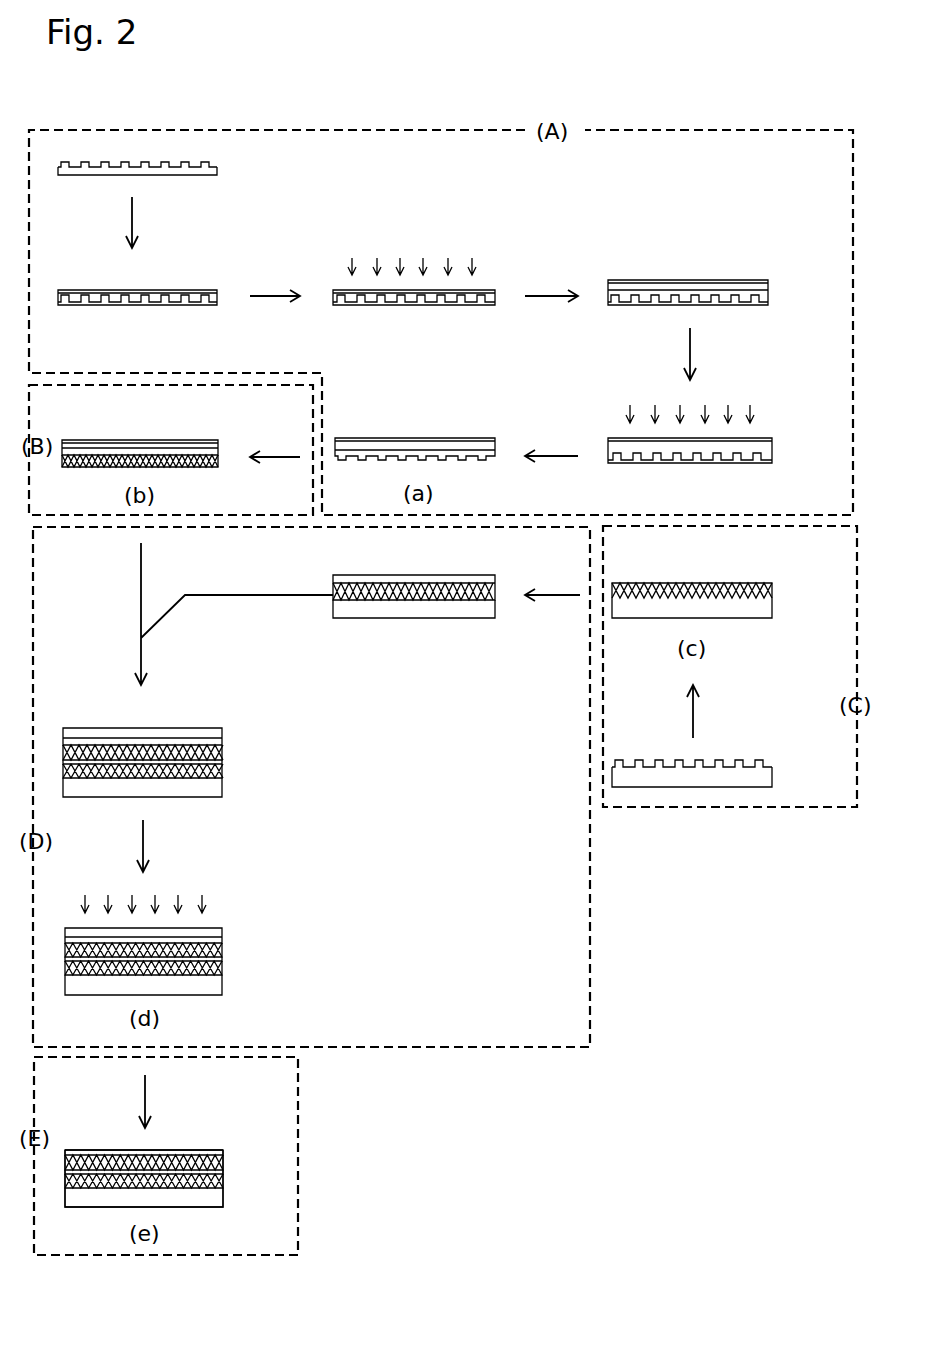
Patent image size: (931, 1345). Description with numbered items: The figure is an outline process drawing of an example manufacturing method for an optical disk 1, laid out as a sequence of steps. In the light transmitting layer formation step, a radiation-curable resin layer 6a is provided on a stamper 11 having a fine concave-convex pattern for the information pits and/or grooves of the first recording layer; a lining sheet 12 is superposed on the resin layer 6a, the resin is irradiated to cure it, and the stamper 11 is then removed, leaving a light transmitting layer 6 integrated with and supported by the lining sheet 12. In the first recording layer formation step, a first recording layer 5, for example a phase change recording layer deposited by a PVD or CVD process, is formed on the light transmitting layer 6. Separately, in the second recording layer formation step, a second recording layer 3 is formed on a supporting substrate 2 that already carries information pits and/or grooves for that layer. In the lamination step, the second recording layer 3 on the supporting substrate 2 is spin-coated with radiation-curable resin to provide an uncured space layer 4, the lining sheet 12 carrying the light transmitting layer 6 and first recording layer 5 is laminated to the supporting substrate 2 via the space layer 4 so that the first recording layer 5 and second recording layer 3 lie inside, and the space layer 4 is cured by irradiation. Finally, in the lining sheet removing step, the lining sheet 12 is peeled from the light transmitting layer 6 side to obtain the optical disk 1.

The optical disk 1 is at (199, 1217).
The supporting substrate 2 is at (465, 610).
The second recording layer 3 is at (495, 590).
The space layer 4 is at (470, 575).
The first recording layer 5 is at (200, 466).
The light transmitting layer 6 is at (772, 453).
The radiation-curable resin layer 6a is at (200, 292).
The stamper 11 is at (217, 170).
The lining sheet 12 is at (752, 284).